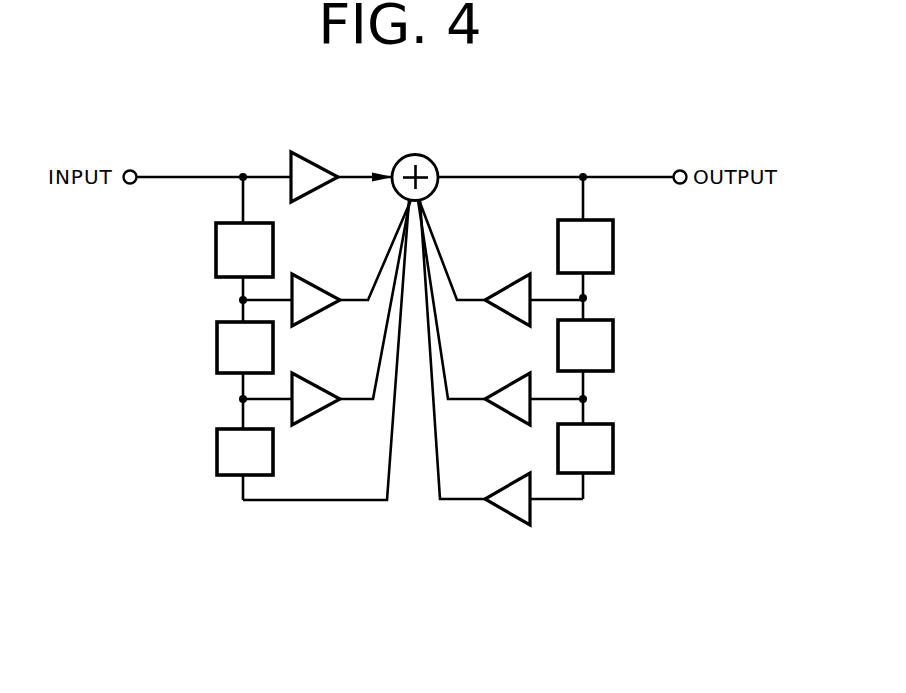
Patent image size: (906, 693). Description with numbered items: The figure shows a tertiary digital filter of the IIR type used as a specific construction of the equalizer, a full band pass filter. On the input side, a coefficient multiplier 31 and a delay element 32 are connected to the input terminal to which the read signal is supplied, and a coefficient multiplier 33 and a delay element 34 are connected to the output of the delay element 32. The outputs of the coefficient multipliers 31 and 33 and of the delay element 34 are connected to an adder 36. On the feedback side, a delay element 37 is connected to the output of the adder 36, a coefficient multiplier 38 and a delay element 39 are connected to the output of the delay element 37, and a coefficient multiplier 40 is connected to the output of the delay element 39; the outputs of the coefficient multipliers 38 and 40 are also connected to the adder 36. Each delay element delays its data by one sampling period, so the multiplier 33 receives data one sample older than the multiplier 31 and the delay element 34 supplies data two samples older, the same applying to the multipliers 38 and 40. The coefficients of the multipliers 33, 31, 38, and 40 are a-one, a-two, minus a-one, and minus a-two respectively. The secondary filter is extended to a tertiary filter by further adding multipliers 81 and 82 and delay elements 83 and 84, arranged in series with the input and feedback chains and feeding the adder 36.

The coefficient multiplier 31 is at (320, 190).
The delay element 32 is at (215, 249).
The coefficient multiplier 33 is at (320, 313).
The delay element 34 is at (215, 348).
The adder 36 is at (441, 160).
The delay element 37 is at (616, 245).
The coefficient multiplier 38 is at (506, 318).
The delay element 39 is at (616, 345).
The coefficient multiplier 40 is at (506, 418).
The multiplier 81 is at (320, 413).
The multiplier 82 is at (502, 510).
The delay element 83 is at (215, 440).
The delay element 84 is at (616, 447).